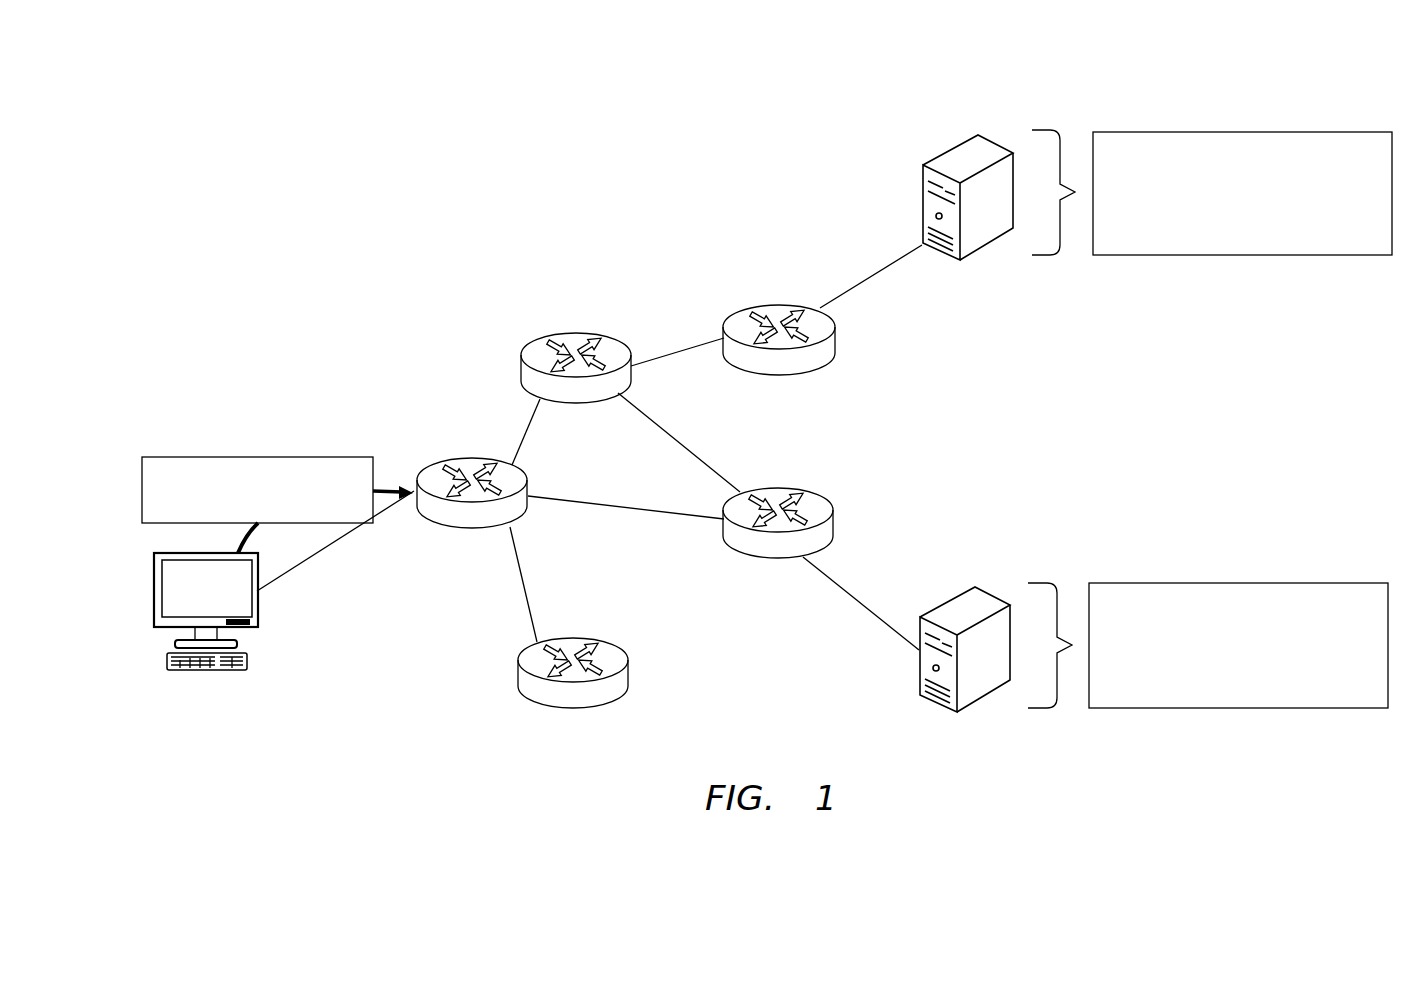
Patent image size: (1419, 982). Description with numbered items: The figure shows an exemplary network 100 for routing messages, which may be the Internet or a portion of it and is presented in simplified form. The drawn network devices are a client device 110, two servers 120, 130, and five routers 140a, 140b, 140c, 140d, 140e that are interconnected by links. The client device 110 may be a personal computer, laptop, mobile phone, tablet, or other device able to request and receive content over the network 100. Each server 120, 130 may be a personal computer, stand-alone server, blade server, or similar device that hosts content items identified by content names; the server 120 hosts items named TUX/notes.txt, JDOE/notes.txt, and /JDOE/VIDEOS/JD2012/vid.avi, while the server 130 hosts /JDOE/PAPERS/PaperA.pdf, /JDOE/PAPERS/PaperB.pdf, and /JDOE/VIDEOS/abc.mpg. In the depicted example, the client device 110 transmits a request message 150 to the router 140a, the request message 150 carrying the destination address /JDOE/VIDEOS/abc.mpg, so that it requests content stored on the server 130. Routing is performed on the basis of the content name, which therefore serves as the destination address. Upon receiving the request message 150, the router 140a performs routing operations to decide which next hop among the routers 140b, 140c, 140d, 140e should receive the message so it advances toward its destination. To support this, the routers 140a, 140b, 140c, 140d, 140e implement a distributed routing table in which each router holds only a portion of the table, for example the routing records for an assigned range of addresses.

The exemplary network 100 is at (290, 106).
The client device 110 is at (255, 628).
The server 120 is at (953, 152).
The server 130 is at (960, 597).
The router 140a is at (478, 456).
The router 140b is at (581, 331).
The router 140c is at (784, 304).
The router 140d is at (783, 487).
The router 140e is at (577, 637).
The request message 150 is at (261, 456).